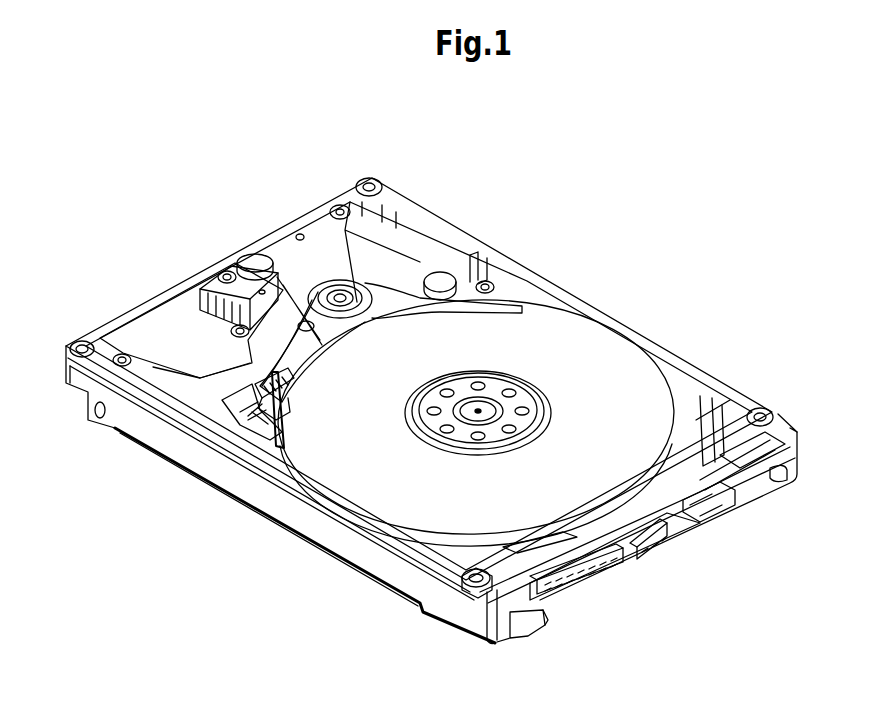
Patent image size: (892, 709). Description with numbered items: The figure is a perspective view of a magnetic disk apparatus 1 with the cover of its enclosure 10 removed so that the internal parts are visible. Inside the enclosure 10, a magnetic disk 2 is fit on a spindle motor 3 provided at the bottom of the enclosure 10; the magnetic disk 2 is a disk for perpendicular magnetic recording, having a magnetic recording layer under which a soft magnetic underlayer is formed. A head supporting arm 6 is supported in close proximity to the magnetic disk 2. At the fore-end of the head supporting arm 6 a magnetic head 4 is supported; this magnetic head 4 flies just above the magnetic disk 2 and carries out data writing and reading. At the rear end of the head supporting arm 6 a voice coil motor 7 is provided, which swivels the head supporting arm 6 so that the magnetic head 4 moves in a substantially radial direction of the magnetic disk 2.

The magnetic disk apparatus 1 is at (556, 182).
The magnetic disk 2 is at (606, 348).
The spindle motor 3 is at (497, 389).
The magnetic head 4 is at (290, 404).
The head supporting arm 6 is at (292, 341).
The voice coil motor 7 is at (322, 241).
The enclosure 10 is at (287, 505).